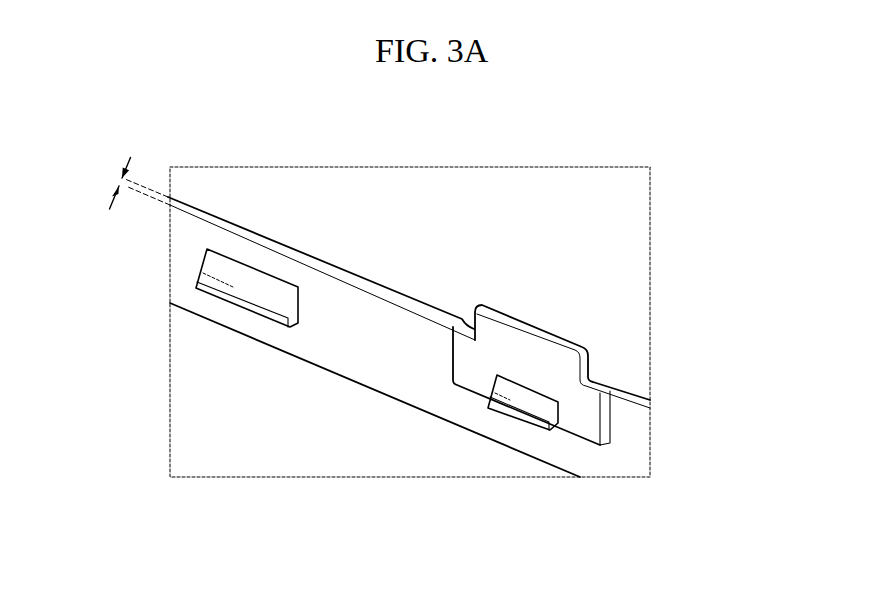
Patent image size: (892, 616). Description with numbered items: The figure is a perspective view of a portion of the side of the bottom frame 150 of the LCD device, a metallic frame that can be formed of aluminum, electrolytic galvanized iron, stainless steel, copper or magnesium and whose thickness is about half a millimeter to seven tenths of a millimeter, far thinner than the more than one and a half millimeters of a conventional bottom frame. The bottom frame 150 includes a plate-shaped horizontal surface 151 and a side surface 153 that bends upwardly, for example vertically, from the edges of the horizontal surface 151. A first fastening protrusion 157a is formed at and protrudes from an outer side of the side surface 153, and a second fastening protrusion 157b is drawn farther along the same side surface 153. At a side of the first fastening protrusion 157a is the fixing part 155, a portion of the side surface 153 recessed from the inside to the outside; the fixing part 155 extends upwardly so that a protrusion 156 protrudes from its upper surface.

The bottom frame 150 is at (773, 357).
The horizontal surface 151 is at (625, 333).
The side surface 153 is at (640, 452).
The fixing part 155 is at (567, 432).
The protrusion 156 is at (503, 309).
The first fastening protrusion 157a is at (196, 277).
The second coupling block 157b is at (510, 421).